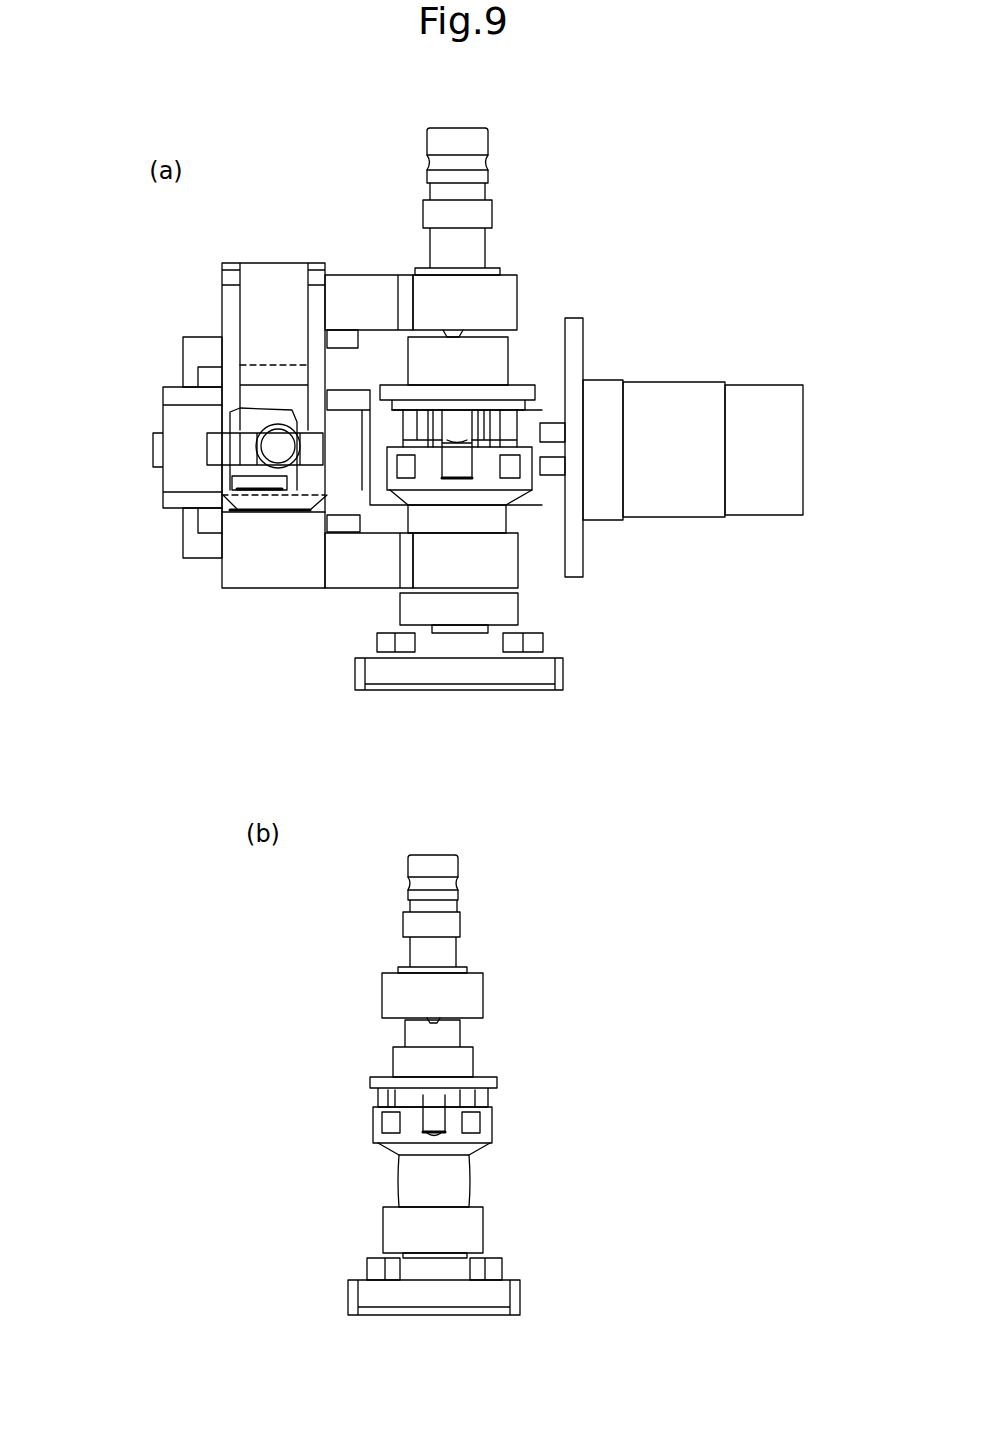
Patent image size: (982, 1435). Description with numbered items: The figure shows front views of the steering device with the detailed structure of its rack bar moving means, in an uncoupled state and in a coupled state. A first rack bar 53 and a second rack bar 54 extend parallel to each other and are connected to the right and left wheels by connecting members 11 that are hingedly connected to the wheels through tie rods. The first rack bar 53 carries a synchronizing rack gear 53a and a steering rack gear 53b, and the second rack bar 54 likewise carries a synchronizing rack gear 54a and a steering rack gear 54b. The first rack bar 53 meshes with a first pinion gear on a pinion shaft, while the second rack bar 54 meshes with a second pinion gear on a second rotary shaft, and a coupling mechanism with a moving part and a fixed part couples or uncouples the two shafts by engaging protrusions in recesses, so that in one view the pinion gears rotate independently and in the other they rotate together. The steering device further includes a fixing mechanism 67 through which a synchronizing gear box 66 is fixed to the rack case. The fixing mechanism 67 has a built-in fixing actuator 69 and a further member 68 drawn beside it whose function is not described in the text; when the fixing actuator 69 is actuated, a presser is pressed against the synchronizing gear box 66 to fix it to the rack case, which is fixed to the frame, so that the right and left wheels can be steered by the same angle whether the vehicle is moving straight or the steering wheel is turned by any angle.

The connecting member 11 is at (275, 447).
The first rack bar 53 is at (277, 297).
The synchronizing rack gear 53a is at (243, 380).
The steering rack gear 53b is at (407, 293).
The second rack bar 54 is at (272, 563).
The synchronizing rack gear 54a is at (230, 485).
The steering rack gear 54b is at (407, 580).
The synchronizing gear box 66 is at (187, 417).
The fixing mechanism 67 is at (757, 363).
The coupling 68 is at (553, 447).
The fixing actuator 69 is at (682, 480).